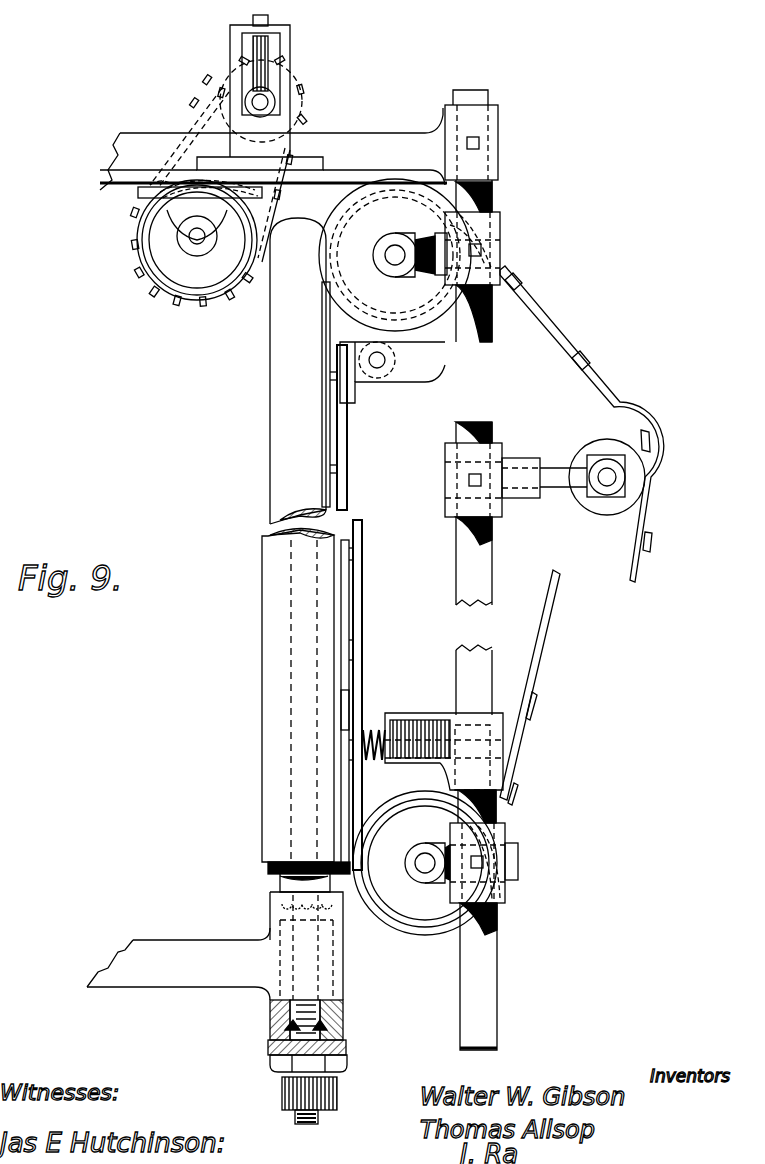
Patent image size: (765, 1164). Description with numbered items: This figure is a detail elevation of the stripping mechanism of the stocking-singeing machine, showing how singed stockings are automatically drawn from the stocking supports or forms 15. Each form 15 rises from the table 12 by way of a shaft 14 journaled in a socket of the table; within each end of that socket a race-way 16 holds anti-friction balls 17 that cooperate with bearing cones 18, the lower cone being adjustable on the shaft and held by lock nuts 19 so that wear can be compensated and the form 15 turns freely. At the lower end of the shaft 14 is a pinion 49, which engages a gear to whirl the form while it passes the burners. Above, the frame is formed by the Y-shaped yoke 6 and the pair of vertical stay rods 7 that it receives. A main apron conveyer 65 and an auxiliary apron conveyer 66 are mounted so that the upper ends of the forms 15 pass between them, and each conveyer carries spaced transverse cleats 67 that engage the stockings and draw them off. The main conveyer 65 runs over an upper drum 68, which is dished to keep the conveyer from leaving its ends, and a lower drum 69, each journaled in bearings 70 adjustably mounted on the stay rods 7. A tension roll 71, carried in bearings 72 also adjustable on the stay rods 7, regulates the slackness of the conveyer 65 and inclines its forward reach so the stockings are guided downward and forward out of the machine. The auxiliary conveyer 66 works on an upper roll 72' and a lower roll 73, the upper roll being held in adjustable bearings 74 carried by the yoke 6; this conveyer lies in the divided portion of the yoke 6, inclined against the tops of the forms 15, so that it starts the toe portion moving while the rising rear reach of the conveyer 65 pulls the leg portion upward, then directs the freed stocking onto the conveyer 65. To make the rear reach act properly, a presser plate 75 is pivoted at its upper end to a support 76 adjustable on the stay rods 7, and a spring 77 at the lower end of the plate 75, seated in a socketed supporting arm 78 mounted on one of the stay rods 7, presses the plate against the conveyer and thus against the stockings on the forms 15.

The yoke 6 is at (273, 153).
The stay rods 7 is at (470, 600).
The table 12 is at (178, 964).
The shaft 14 is at (307, 1125).
The stocking support or form 15 is at (274, 510).
The race-way 16 is at (285, 905).
The anti-friction balls 17 is at (318, 912).
The bearing cones 18 is at (272, 897).
The lock nuts 19 is at (340, 1068).
The pinion 49 is at (282, 1095).
The main apron conveyer 65 is at (330, 452).
The auxiliary apron conveyer 66 is at (212, 93).
The cleats 67 is at (590, 375).
The upper drum 68 is at (395, 255).
The lower drum 69 is at (425, 863).
The bearings 70 is at (502, 226).
The tension roll 71 is at (638, 487).
The bearings 72 is at (516, 491).
The upper roll 72' is at (282, 99).
The lower roll 73 is at (165, 282).
The adjustable bearings 74 is at (291, 42).
The presser plate 75 is at (350, 505).
The support 76 is at (405, 385).
The spring 77 is at (380, 735).
The socketed supporting arm 78 is at (443, 714).